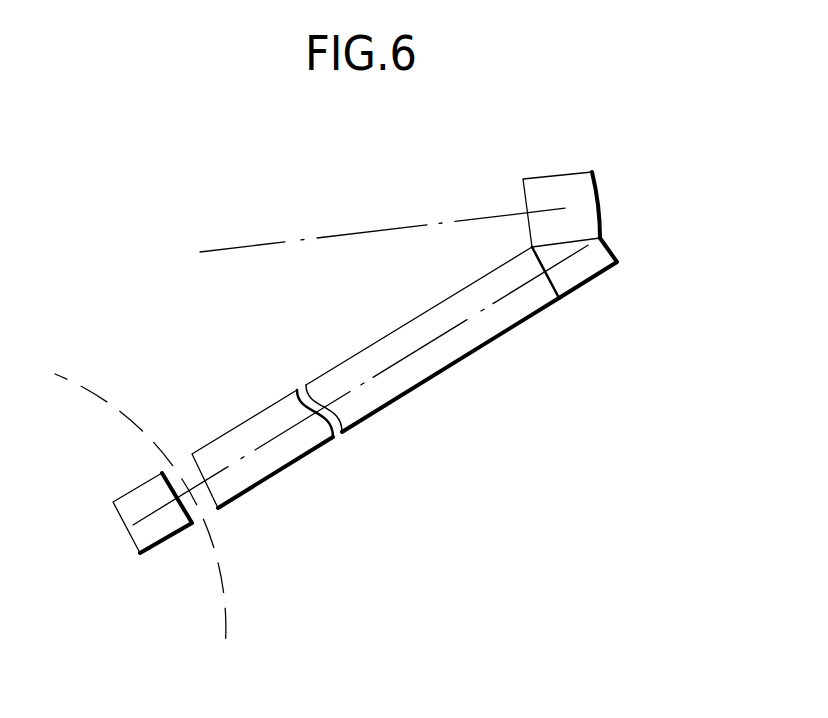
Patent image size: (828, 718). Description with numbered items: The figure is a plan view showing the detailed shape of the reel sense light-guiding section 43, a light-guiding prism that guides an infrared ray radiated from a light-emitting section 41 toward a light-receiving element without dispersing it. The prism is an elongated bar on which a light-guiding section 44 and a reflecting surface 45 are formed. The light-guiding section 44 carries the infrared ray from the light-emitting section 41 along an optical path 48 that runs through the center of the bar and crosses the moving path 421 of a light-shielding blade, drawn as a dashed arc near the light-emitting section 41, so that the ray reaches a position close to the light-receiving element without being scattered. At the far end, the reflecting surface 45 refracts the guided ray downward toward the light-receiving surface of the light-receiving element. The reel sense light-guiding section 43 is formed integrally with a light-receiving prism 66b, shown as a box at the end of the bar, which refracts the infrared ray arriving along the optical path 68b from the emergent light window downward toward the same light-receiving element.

The light-emitting section 41 is at (130, 538).
The moving path of light-shielding blade 421 is at (218, 578).
The reel sense light-guiding section 43 is at (447, 370).
The light-guiding section 44 is at (368, 402).
The reflecting surface 45 is at (578, 268).
The optical path 48 is at (388, 367).
The light-receiving prism 66b is at (600, 213).
The optical path 68b is at (355, 232).